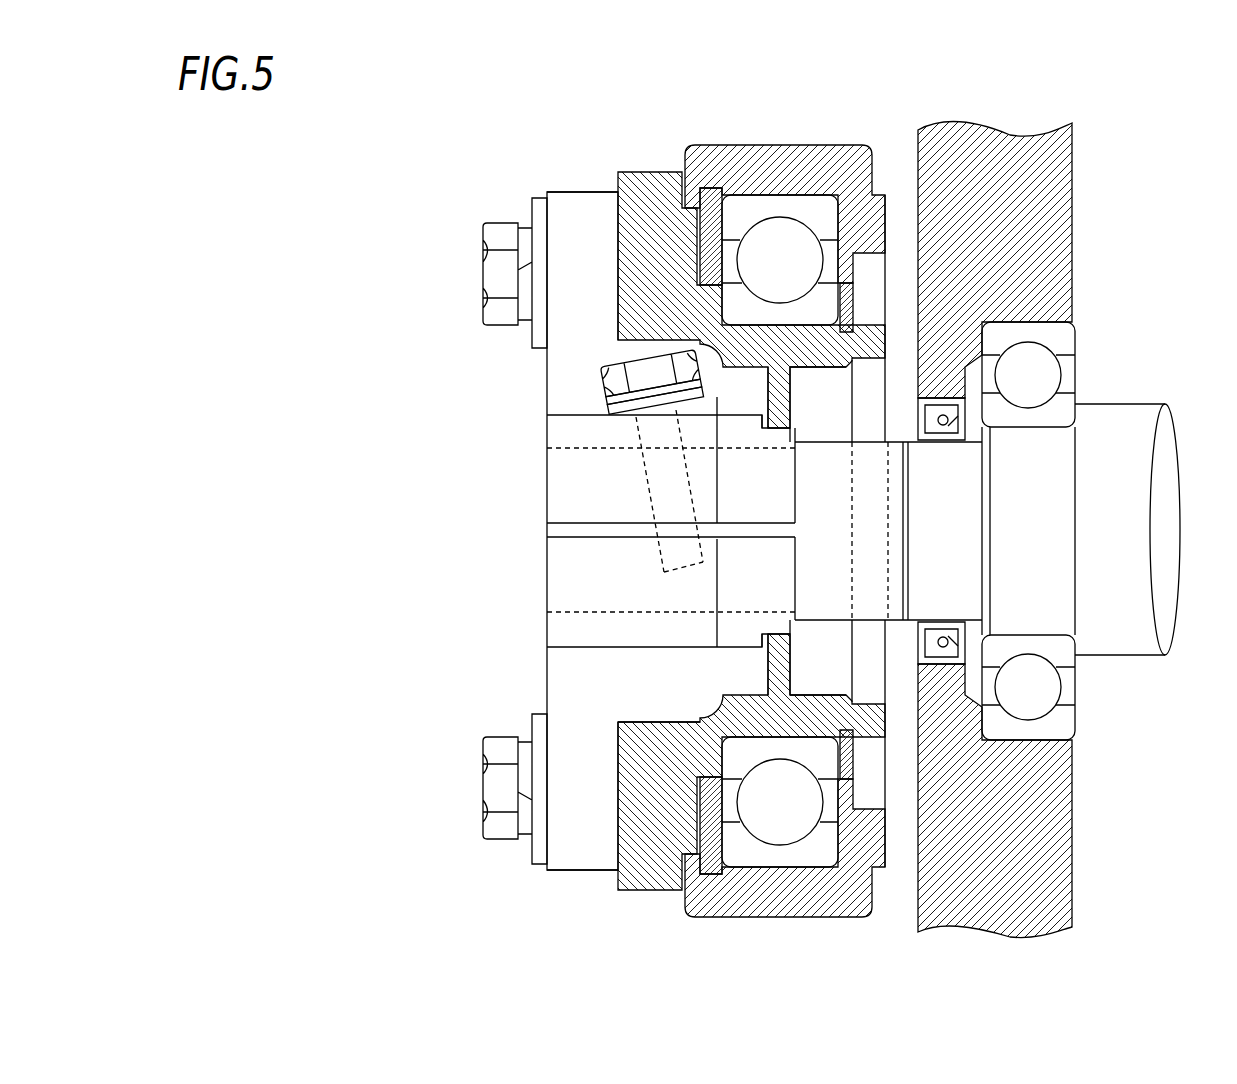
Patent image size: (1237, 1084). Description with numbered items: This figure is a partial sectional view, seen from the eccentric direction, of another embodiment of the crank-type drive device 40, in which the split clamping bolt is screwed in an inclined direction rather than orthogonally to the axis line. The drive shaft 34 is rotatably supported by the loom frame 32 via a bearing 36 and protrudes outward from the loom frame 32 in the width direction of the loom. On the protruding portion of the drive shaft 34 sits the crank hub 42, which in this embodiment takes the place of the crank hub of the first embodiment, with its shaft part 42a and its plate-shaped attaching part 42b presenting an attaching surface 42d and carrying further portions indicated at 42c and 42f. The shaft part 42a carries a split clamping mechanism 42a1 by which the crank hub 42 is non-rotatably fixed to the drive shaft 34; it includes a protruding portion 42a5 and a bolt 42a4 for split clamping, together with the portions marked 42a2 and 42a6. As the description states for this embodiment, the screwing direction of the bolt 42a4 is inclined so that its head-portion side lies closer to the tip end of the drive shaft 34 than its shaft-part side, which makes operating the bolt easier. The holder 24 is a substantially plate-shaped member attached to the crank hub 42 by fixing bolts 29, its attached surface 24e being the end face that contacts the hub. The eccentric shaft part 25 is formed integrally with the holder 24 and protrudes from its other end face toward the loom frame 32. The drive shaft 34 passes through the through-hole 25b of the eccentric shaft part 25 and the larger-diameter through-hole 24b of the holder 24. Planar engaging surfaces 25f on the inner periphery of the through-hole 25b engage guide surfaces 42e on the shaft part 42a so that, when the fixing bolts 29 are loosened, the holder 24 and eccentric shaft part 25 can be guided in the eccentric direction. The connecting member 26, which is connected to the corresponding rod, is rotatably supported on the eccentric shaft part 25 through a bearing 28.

The rotation transmission unit 40 is at (462, 165).
The hub plate 42 is at (547, 185).
The upper flange of hub plate 42b is at (603, 188).
The lower flange of hub plate 42d is at (630, 830).
The bolt hole 42f is at (592, 450).
The bolt hole 42c is at (633, 462).
The end face of hub plate 42e is at (837, 445).
The set bolt 42a is at (748, 412).
The bolt head 42a4 is at (600, 372).
The bolt flange 42a6 is at (600, 383).
The bolt washer face 42a5 is at (560, 435).
The bolt shank 42a2 is at (547, 530).
The bolt tip 42a1 is at (680, 557).
The fixing bolt 29 is at (485, 240).
The holder 24 is at (662, 170).
The attached surface 24e is at (618, 887).
The through-hole 24b is at (665, 718).
The connecting member 26 is at (862, 148).
The bearing 28 is at (782, 207).
The eccentric shaft part 25 is at (805, 340).
The engaging surface 25f is at (903, 433).
The through-hole 25b is at (748, 690).
The loom frame 32 is at (1077, 790).
The bearing 36 is at (1076, 324).
The drive shaft 34 is at (1150, 404).